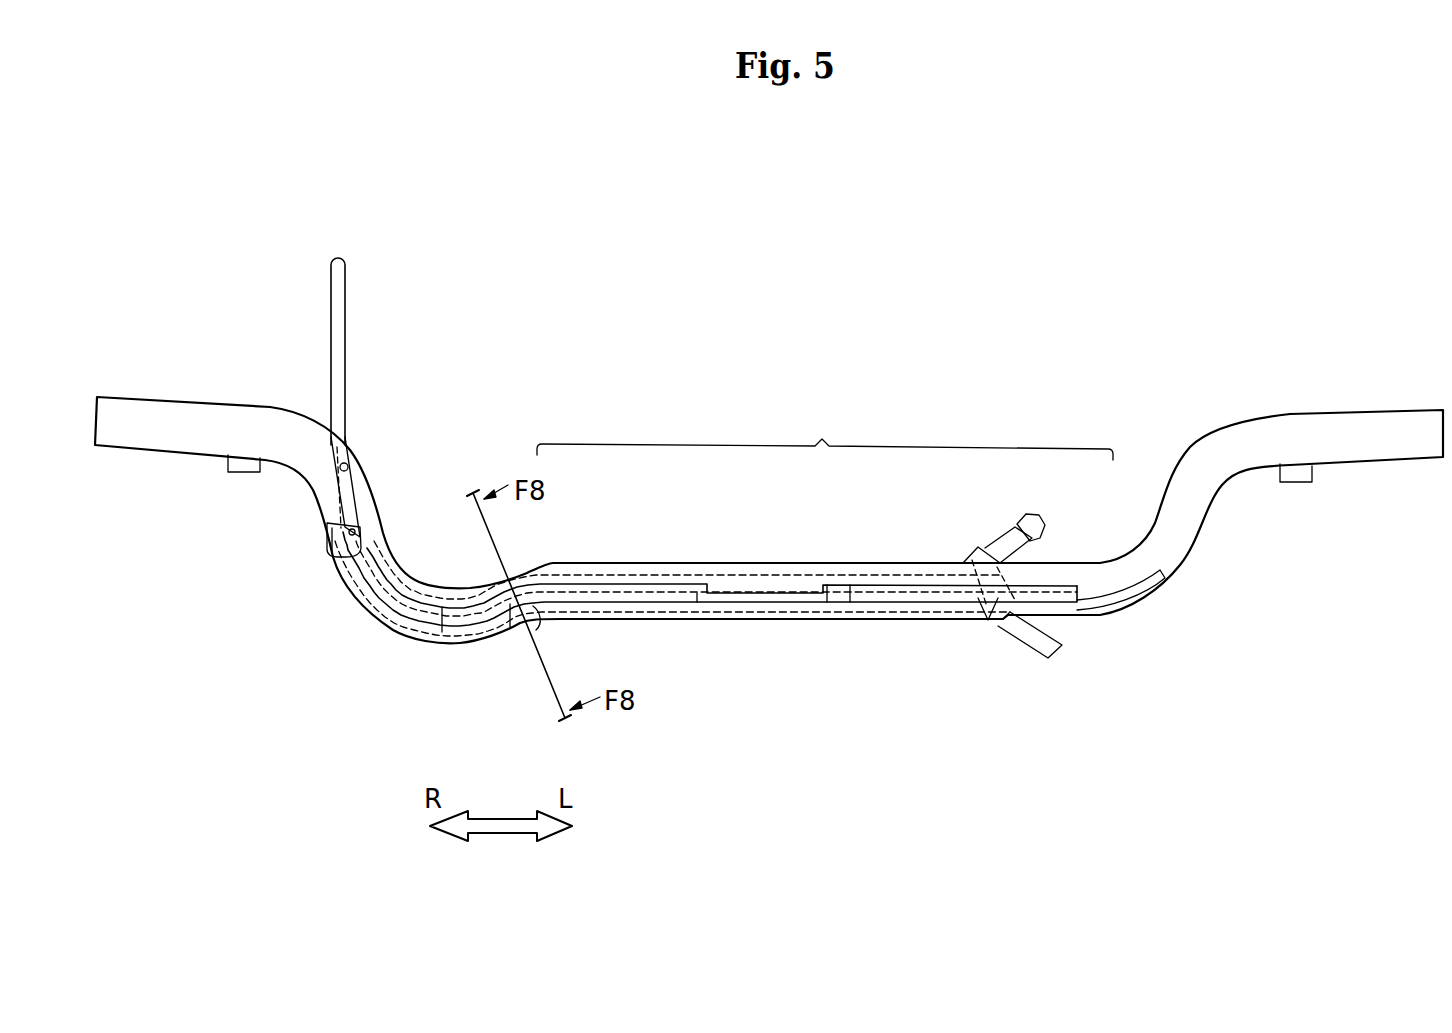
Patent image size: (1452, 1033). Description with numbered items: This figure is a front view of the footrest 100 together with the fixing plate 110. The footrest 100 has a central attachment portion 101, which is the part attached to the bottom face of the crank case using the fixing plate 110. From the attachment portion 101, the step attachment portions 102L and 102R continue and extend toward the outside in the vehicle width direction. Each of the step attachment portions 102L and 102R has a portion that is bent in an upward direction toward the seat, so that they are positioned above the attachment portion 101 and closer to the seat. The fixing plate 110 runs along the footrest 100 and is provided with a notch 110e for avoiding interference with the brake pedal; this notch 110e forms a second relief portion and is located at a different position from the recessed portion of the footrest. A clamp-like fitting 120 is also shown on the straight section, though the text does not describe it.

The footrest 100 is at (1304, 406).
The attachment portion 101 is at (825, 433).
The step attachment portion 102R is at (147, 410).
The step attachment portion 102L is at (1397, 420).
The fixing plate 110 is at (441, 649).
The notch 110e is at (542, 633).
The clamp 120 is at (1045, 656).